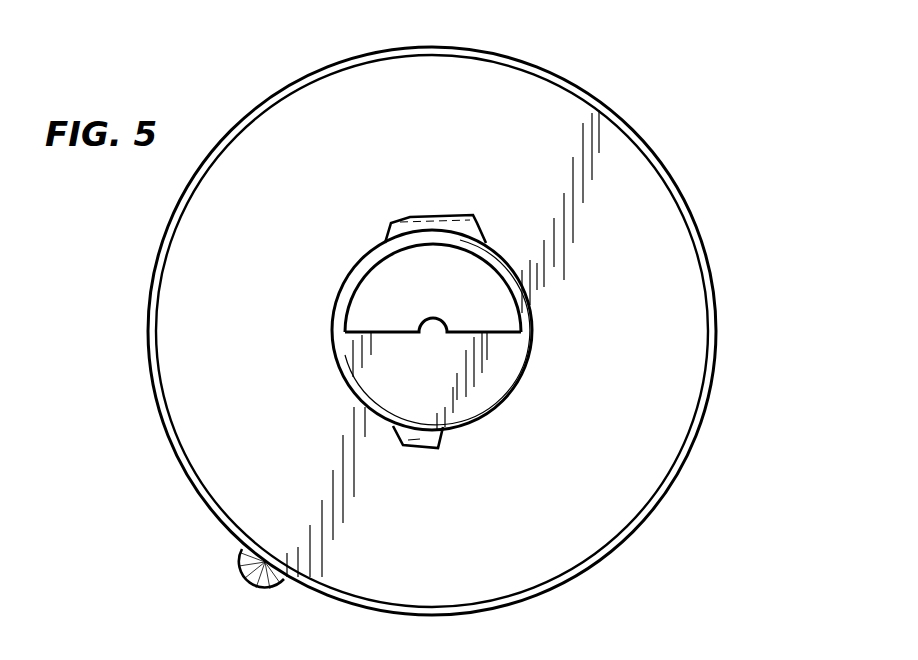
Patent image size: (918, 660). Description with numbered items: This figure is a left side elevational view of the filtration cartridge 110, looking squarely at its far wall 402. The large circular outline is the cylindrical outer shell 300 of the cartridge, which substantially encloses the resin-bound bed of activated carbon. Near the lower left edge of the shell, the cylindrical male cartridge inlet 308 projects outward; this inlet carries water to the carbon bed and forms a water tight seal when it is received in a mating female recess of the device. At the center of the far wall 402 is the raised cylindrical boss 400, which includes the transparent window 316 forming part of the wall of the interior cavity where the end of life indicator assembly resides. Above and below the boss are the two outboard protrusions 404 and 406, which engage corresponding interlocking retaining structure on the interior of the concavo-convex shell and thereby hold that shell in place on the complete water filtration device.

The filtration cartridge 110 is at (730, 152).
The cylindrical outer shell 300 is at (683, 325).
The male cartridge inlet 308 is at (237, 578).
The transparent window 316 is at (383, 280).
The raised cylindrical boss 400 is at (352, 355).
The far wall 402 is at (446, 115).
The outboard protrusion 404 is at (427, 215).
The outboard protrusion 406 is at (443, 440).